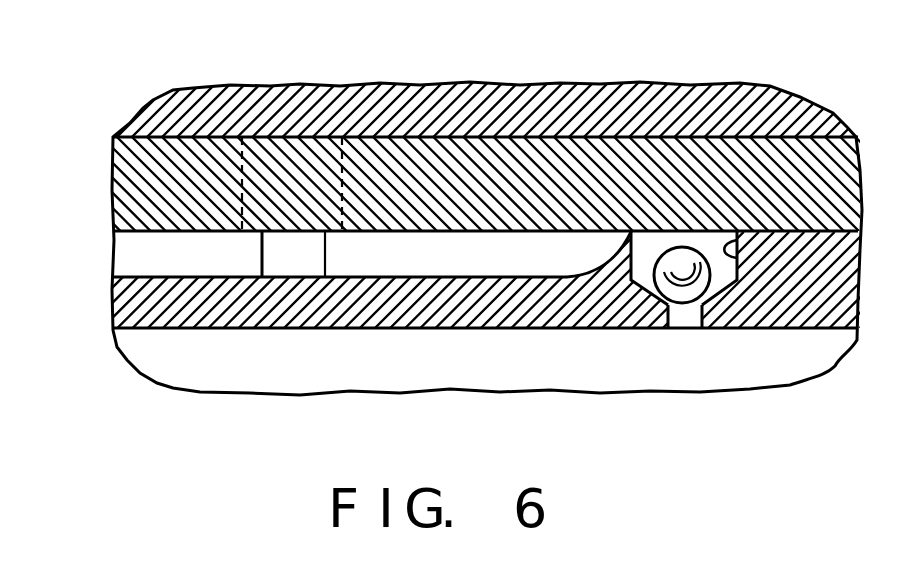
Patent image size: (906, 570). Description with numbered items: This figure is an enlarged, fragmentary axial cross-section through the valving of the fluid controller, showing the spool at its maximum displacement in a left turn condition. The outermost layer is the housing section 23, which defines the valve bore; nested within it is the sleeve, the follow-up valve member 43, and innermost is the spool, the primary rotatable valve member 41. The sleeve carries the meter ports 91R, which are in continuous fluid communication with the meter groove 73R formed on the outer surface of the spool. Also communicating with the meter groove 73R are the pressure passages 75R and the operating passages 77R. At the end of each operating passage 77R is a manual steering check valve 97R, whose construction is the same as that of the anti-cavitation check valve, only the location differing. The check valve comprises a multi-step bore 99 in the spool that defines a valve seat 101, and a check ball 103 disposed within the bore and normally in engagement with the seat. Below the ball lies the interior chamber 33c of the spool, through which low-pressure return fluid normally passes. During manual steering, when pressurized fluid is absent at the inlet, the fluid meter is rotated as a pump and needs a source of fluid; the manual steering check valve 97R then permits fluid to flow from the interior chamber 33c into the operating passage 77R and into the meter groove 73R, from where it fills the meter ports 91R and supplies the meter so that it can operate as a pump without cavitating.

The housing section 23 is at (552, 105).
The follow-up valve member 43 is at (133, 176).
The primary, rotatable valve member 41 is at (133, 300).
The meter ports 91R is at (299, 185).
The pressure passages 75R is at (207, 260).
The meter groove 73R is at (292, 260).
The operating passages 77R is at (430, 255).
The manual steering check valve 97R is at (689, 234).
The multi-step bore 99 is at (738, 255).
The valve seat 101 is at (733, 283).
The check ball 103 is at (656, 298).
The interior chamber 33c is at (649, 342).